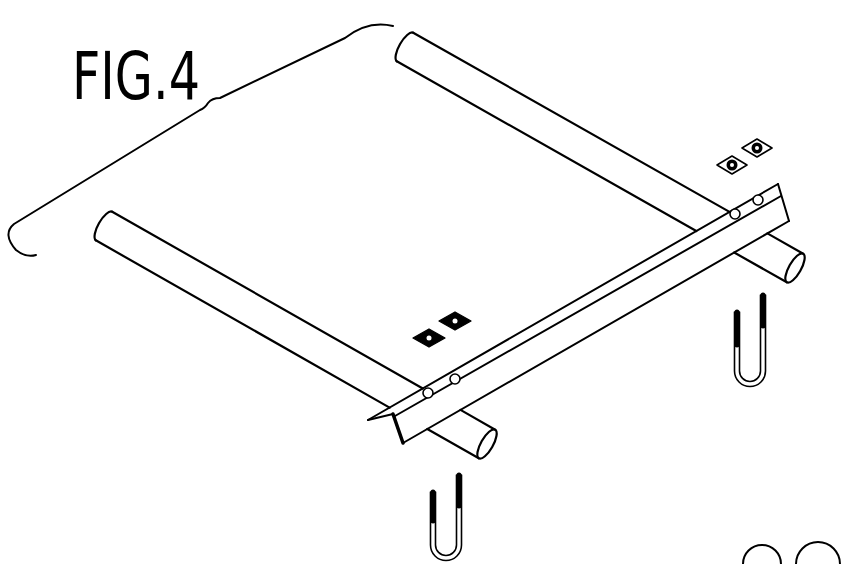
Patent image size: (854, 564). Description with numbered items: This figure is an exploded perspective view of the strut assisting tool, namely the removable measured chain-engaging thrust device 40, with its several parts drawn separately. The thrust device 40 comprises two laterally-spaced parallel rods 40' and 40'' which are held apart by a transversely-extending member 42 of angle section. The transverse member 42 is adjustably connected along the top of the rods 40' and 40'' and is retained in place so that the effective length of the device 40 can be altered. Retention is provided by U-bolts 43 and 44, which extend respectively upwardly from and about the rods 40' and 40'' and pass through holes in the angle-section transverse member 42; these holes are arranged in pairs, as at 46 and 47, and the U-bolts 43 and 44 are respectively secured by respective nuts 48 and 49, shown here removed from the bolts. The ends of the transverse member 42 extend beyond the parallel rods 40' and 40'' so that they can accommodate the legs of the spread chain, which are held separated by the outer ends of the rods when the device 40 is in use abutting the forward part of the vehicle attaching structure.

The measured chain-engaging thrust device 40 is at (602, 153).
The parallel rod 40' is at (298, 334).
The parallel rod 40'' is at (602, 158).
The transversely-extending member of angle section 42 is at (600, 288).
The U-bolt 43 is at (429, 522).
The U-bolt 44 is at (733, 360).
The holes 46 is at (433, 394).
The holes 47 is at (753, 201).
The nuts 48 is at (446, 318).
The nuts 49 is at (721, 154).